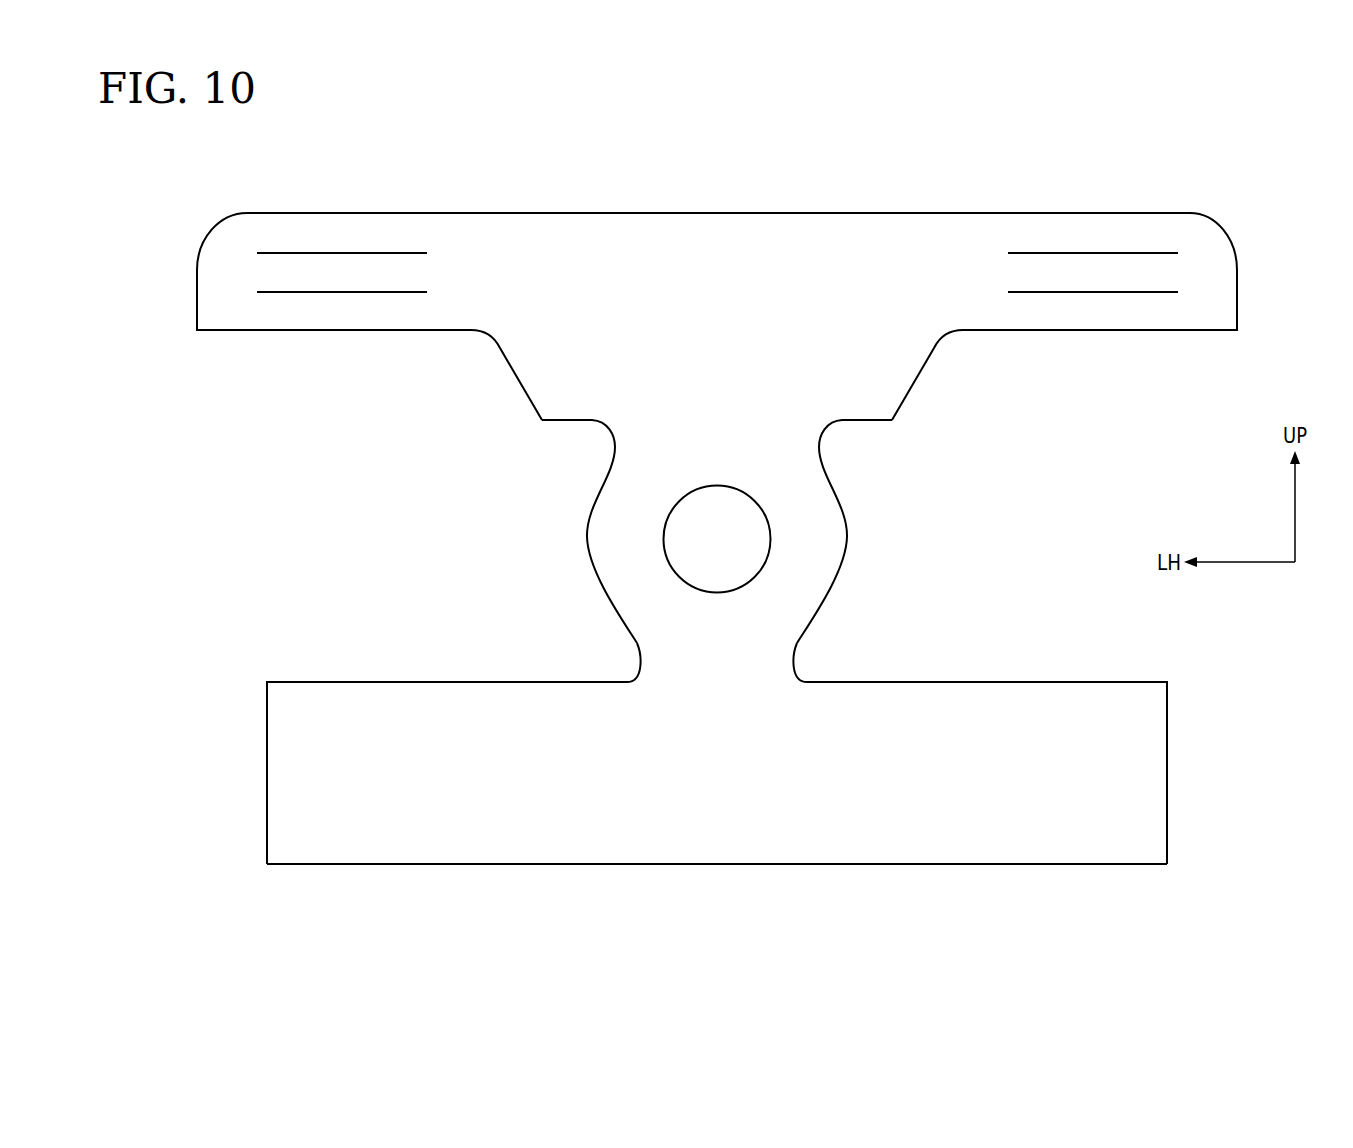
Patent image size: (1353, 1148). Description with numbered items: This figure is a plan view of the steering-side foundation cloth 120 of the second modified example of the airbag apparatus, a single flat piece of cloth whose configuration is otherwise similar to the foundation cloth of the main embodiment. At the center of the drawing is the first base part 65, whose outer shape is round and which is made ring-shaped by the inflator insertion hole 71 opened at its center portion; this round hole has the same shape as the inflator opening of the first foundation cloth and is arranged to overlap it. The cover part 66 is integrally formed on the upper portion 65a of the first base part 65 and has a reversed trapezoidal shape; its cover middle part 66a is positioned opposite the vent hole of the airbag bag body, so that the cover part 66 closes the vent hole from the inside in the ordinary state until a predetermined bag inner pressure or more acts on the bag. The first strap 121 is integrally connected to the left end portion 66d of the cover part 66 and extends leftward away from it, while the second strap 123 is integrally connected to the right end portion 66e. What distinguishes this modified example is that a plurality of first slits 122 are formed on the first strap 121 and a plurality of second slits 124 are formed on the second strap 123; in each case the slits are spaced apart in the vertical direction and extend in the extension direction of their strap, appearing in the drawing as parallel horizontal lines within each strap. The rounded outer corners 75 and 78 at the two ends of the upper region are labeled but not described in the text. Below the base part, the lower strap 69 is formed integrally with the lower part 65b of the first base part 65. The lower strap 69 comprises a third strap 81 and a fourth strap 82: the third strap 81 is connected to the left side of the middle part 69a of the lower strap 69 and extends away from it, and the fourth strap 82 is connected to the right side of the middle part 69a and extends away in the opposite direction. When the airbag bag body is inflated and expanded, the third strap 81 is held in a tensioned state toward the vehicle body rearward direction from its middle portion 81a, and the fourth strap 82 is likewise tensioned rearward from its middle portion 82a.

The steering-side foundation cloth 120 is at (813, 210).
The cover part 66 is at (717, 235).
The cover middle part 66a is at (717, 293).
The left end portion 66d is at (470, 280).
The right end portion 66e is at (963, 280).
The left rounded corner 75 is at (223, 248).
The right rounded corner 78 is at (1212, 248).
The first strap 121 is at (337, 227).
The second strap 123 is at (1098, 227).
The first slit 122 is at (348, 253).
The second slit 124 is at (1087, 253).
The first base part 65 is at (835, 538).
The upper portion 65a is at (717, 403).
The lower part 65b is at (718, 670).
The inflator insertion hole 71 is at (673, 530).
The lower strap 69 is at (703, 828).
The middle part 69a is at (732, 810).
The third strap 81 is at (355, 828).
The middle portion 81a is at (443, 828).
The fourth strap 82 is at (1079, 828).
The middle portion 82a is at (992, 828).